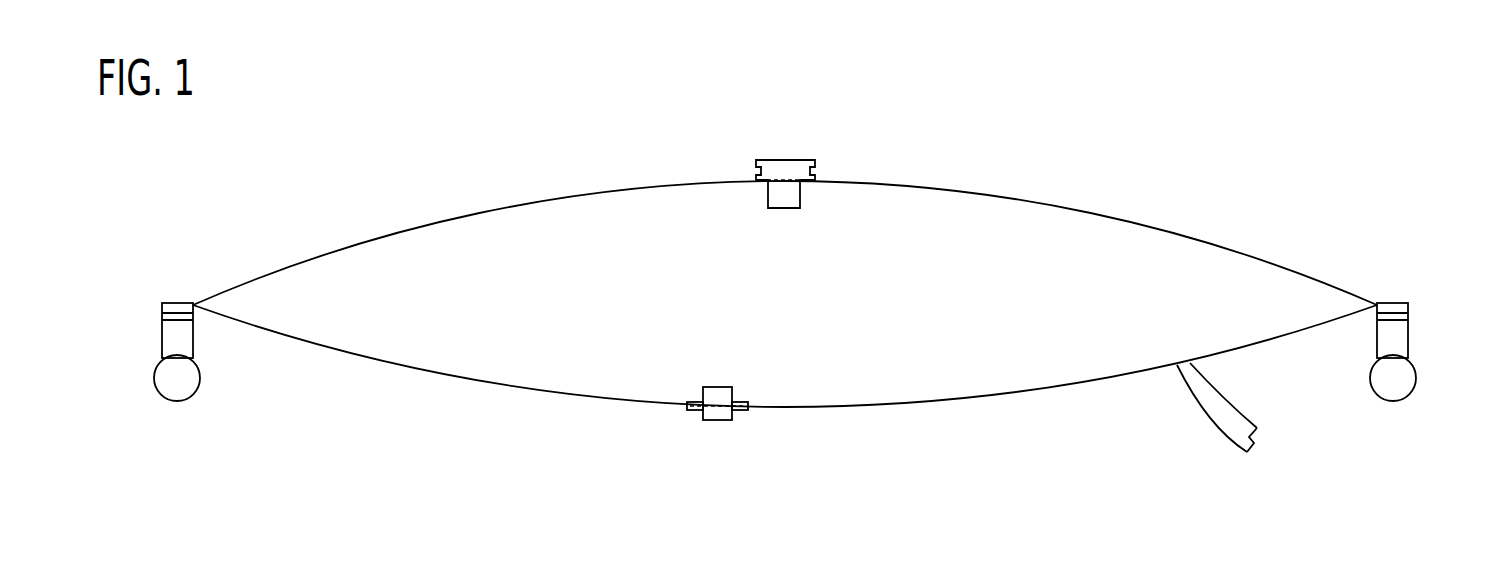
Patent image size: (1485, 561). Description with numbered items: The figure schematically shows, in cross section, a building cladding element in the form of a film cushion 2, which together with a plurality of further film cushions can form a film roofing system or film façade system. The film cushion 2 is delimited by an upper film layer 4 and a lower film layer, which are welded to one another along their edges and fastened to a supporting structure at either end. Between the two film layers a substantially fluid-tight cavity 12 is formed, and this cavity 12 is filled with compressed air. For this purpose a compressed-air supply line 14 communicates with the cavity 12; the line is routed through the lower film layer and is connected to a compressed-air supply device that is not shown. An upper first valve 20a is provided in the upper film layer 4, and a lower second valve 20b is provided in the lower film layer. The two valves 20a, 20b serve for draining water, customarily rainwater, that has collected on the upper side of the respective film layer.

The film cushion 2 is at (784, 294).
The upper film layer 4 is at (1027, 197).
The cavity 12 is at (800, 312).
The compressed-air supply line 14 is at (1217, 413).
The upper first valve 20a is at (787, 170).
The lower second valve 20b is at (718, 421).